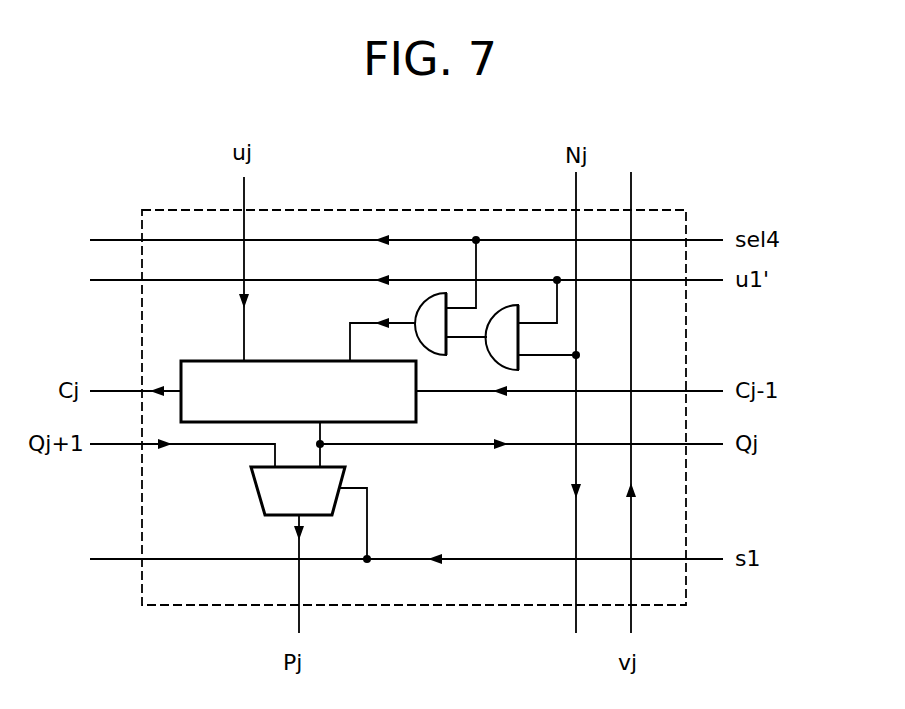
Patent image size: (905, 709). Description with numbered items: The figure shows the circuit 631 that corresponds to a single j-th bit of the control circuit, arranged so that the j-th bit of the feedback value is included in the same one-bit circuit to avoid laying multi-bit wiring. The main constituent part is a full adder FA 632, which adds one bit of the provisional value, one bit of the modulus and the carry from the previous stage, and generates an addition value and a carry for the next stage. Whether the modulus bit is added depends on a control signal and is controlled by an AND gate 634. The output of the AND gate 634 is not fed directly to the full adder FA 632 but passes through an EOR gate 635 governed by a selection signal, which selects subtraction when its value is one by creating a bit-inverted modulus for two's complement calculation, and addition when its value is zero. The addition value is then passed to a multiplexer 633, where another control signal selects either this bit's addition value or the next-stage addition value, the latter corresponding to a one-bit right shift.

The circuit corresponding to one bit 631 is at (357, 211).
The full adder FA 632 is at (205, 361).
The multiplexer 633 is at (252, 492).
The AND gate 634 is at (512, 372).
The EOR gate 635 is at (440, 357).